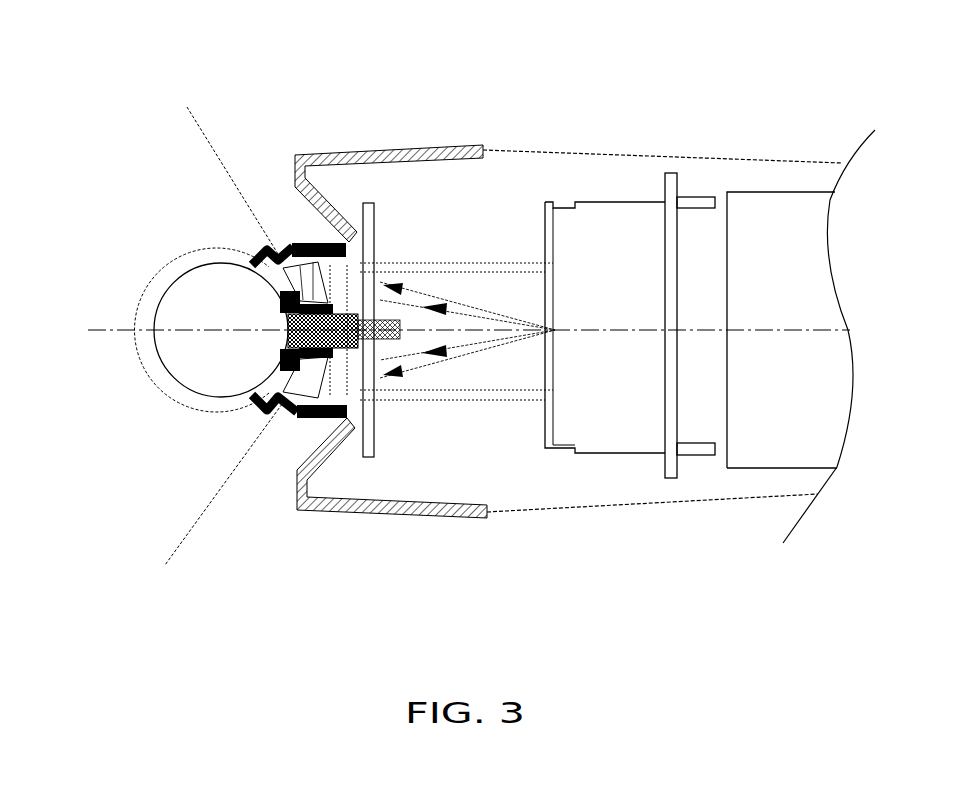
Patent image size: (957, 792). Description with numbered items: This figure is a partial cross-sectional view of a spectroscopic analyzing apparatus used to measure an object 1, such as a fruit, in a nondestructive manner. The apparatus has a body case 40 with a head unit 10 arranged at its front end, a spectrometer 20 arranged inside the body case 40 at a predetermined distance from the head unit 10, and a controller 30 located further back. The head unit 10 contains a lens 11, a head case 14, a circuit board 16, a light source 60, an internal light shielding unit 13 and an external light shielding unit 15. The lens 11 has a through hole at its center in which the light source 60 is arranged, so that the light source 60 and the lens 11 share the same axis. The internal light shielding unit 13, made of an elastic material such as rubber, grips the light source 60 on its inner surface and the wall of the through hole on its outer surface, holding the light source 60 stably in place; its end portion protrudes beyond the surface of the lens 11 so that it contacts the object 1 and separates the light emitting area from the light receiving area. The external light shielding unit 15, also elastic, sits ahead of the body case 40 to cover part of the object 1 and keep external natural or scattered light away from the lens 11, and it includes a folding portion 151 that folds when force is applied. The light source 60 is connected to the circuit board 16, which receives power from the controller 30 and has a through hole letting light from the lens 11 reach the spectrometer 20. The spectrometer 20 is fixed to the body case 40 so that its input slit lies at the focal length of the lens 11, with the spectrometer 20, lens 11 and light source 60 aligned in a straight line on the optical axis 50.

The object 1 is at (207, 124).
The head unit 10 is at (295, 427).
The lens 11 is at (317, 382).
The internal light shielding unit 13 is at (284, 358).
The head case 14 is at (357, 247).
The external light shielding unit 15 is at (300, 243).
The folding portion 151 is at (267, 247).
The circuit board 16 is at (372, 423).
The spectrometer 20 is at (598, 230).
The controller 30 is at (790, 225).
The body case 40 is at (405, 147).
The optical axis 50 is at (125, 325).
The light source 60 is at (340, 338).